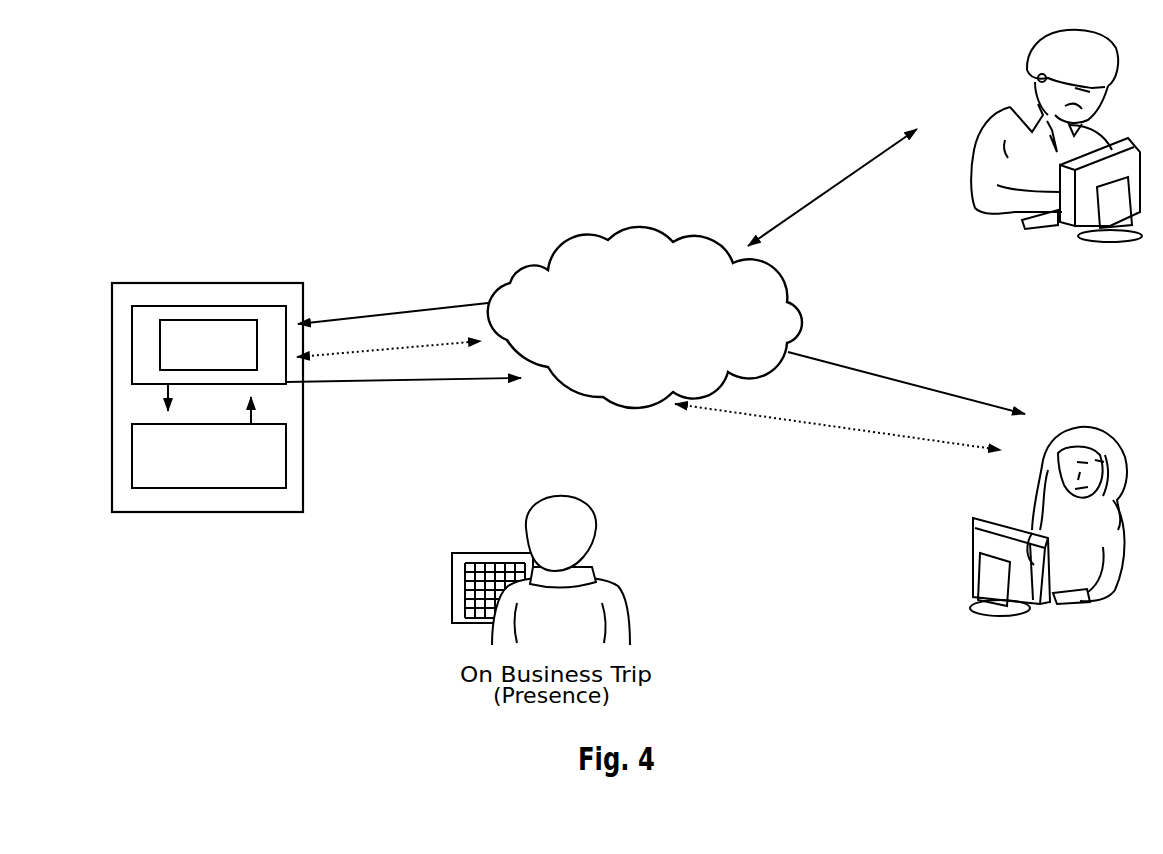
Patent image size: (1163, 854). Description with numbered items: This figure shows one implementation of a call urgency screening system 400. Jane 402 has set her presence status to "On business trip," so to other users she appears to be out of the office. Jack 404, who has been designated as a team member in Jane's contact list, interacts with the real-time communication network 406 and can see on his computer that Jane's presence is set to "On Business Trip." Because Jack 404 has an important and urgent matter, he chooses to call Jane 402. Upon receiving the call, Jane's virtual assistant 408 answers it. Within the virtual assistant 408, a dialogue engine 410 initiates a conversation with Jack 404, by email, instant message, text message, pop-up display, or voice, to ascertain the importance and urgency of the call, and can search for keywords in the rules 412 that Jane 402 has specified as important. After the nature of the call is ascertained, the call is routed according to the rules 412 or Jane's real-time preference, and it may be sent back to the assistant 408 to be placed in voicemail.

The call urgency screening system 400 is at (482, 222).
The Jane 402 is at (1054, 662).
The Jack 404 is at (1010, 277).
The real-time communication network 406 is at (612, 381).
The virtual assistant 408 is at (207, 450).
The dialogue engine 410 is at (200, 358).
The rules 412 is at (186, 478).